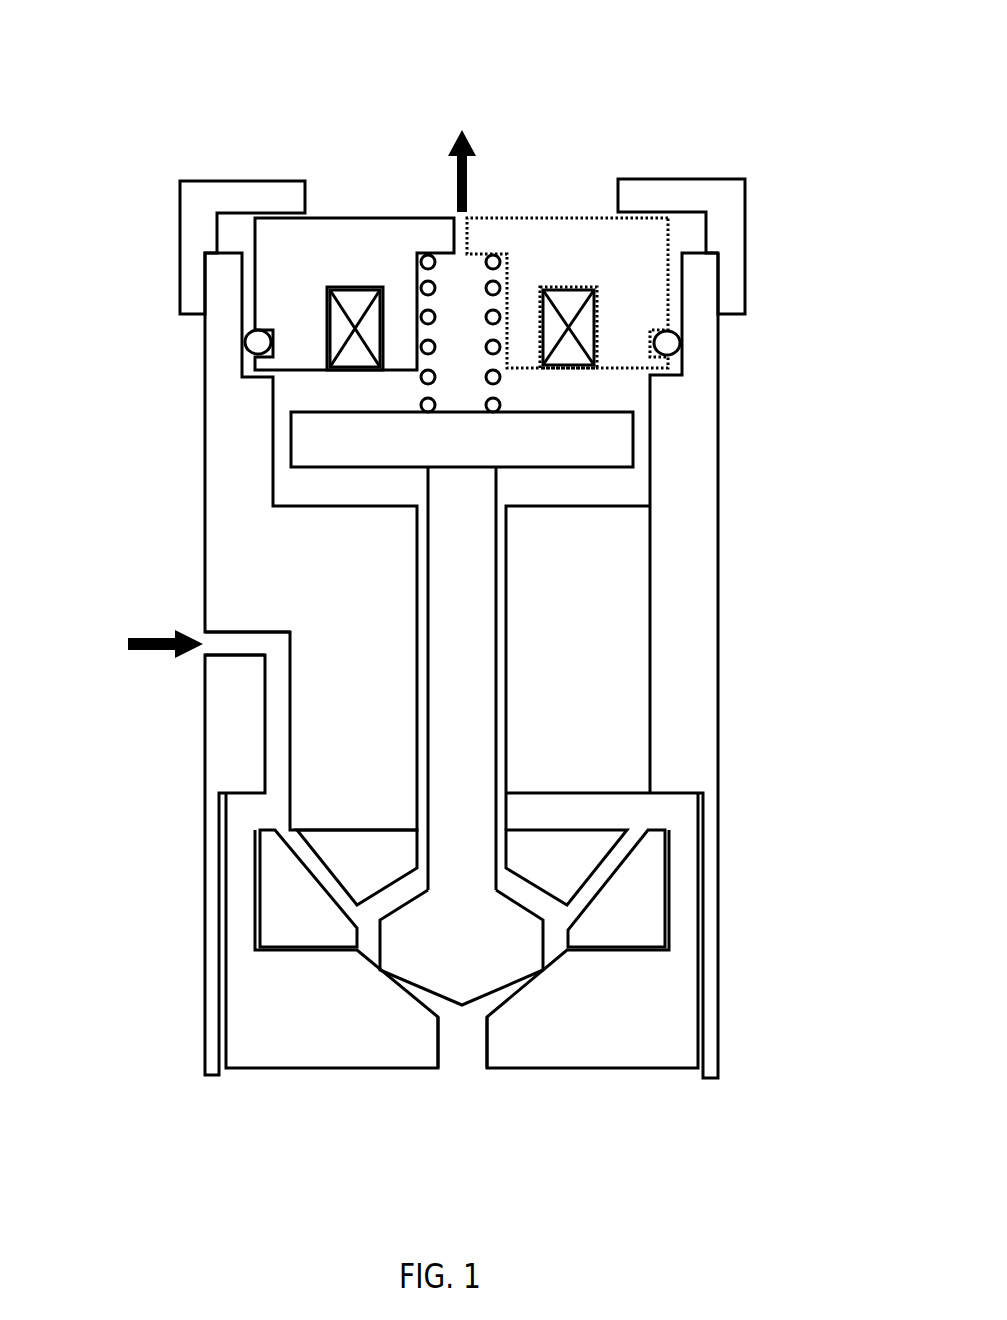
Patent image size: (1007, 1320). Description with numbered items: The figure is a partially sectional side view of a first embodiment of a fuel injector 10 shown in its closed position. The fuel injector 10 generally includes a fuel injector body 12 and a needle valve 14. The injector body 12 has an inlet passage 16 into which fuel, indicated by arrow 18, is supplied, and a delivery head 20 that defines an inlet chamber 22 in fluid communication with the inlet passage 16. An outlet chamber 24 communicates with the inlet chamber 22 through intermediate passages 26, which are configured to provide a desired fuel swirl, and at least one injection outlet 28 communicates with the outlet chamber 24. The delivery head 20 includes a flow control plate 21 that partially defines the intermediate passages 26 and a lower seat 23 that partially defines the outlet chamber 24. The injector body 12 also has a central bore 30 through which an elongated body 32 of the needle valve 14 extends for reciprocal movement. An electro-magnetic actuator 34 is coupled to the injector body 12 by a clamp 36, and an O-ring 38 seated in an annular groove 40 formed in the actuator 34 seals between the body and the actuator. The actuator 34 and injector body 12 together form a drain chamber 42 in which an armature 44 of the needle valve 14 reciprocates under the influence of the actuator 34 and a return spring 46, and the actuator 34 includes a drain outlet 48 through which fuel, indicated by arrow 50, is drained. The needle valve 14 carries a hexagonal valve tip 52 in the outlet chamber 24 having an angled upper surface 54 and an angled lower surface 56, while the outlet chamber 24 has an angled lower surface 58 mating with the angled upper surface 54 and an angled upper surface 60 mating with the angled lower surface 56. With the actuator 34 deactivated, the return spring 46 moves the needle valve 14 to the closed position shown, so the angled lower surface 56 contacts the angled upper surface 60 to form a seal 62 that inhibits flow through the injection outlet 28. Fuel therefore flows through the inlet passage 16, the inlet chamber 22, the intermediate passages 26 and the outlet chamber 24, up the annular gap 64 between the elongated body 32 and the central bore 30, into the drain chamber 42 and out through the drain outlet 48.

The fuel injector 10 is at (747, 133).
The fuel injector body 12 is at (178, 516).
The needle valve 14 is at (491, 537).
The inlet passage 16 is at (236, 643).
The fuel (arrow) 18 is at (153, 643).
The delivery head 20 is at (221, 881).
The flow control plate 21 is at (281, 887).
The inlet chamber 22 is at (274, 813).
The lower seat 23 is at (268, 1007).
The outlet chamber 24 is at (523, 897).
The intermediate passages 26 is at (335, 893).
The injection outlet 28 is at (460, 1055).
The central bore 30 is at (507, 613).
The elongated body 32 is at (459, 664).
The electro-magnetic actuator 34 is at (377, 202).
The clamp 36 is at (180, 195).
The O-ring 38 is at (246, 343).
The annular groove 40 is at (300, 305).
The drain chamber 42 is at (644, 487).
The armature 44 is at (634, 440).
The return spring 46 is at (503, 377).
The drain outlet 48 is at (462, 236).
The fuel (arrow) 50 is at (452, 137).
The valve tip 52 is at (546, 937).
The angled upper surface 54 is at (421, 898).
The angled lower surface 56 is at (546, 993).
The angled lower surface 58 is at (390, 891).
The angled upper surface 60 is at (385, 968).
The seal 62 is at (384, 969).
The annular gap 64 is at (426, 640).